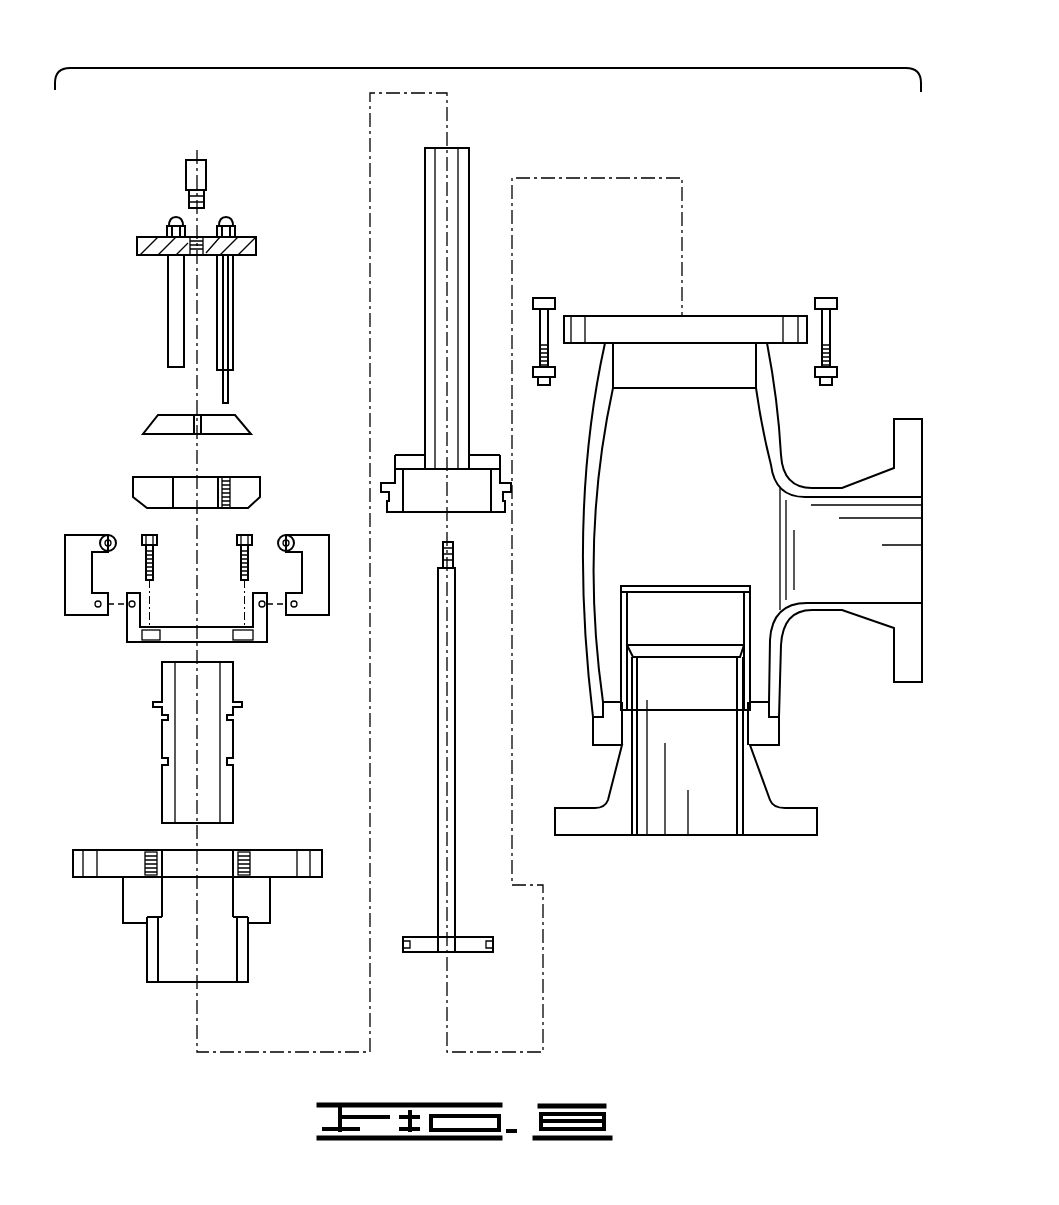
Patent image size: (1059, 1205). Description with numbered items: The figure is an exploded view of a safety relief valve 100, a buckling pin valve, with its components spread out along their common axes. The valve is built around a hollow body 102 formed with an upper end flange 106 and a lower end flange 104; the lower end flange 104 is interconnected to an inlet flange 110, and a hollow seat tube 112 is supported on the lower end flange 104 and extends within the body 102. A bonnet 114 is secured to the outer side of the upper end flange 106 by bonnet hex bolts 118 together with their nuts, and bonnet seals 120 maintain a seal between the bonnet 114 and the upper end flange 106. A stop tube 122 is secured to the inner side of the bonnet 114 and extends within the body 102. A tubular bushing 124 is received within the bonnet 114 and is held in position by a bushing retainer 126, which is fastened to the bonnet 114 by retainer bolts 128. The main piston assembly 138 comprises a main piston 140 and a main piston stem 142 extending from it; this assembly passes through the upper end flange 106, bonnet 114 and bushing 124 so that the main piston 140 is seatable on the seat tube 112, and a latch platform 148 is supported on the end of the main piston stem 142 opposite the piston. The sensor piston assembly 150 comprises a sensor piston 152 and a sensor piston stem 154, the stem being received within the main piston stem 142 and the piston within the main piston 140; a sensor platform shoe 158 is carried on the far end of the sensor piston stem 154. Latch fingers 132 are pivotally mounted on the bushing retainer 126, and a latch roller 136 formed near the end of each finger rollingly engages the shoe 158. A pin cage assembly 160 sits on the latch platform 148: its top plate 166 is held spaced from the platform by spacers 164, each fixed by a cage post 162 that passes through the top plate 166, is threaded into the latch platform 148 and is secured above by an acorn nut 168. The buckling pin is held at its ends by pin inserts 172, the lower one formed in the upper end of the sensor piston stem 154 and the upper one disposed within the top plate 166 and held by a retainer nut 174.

The safety relief valve 100 is at (545, 63).
The hollow body 102 is at (602, 493).
The lower end flange 104 is at (758, 725).
The upper end flange 106 is at (806, 315).
The inlet flange 110 is at (792, 818).
The hollow seat tube 112 is at (619, 622).
The bonnet 114 is at (270, 849).
The bonnet hex bolts 118 is at (544, 297).
The bonnet seals 120 is at (556, 378).
The stop tube 122 is at (243, 943).
The tubular bushing 124 is at (233, 740).
The bushing retainer 126 is at (262, 635).
The retainer bolts 128 is at (147, 534).
The latch fingers 132 is at (68, 588).
The latch roller 136 is at (106, 534).
The main piston assembly 138 is at (413, 442).
The main piston 140 is at (395, 461).
The main piston stem 142 is at (431, 237).
The latch platform 148 is at (137, 477).
The sensor piston assembly 150 is at (431, 921).
The sensor piston 152 is at (432, 955).
The sensor piston stem 154 is at (438, 824).
The sensor platform shoe 158 is at (151, 418).
The pin cage assembly 160 is at (142, 216).
The cage post 162 is at (229, 381).
The spacers 164 is at (168, 317).
The top plate 166 is at (257, 246).
The acorn nut 168 is at (229, 218).
The pin inserts 172 is at (207, 199).
The retainer nut 174 is at (197, 158).